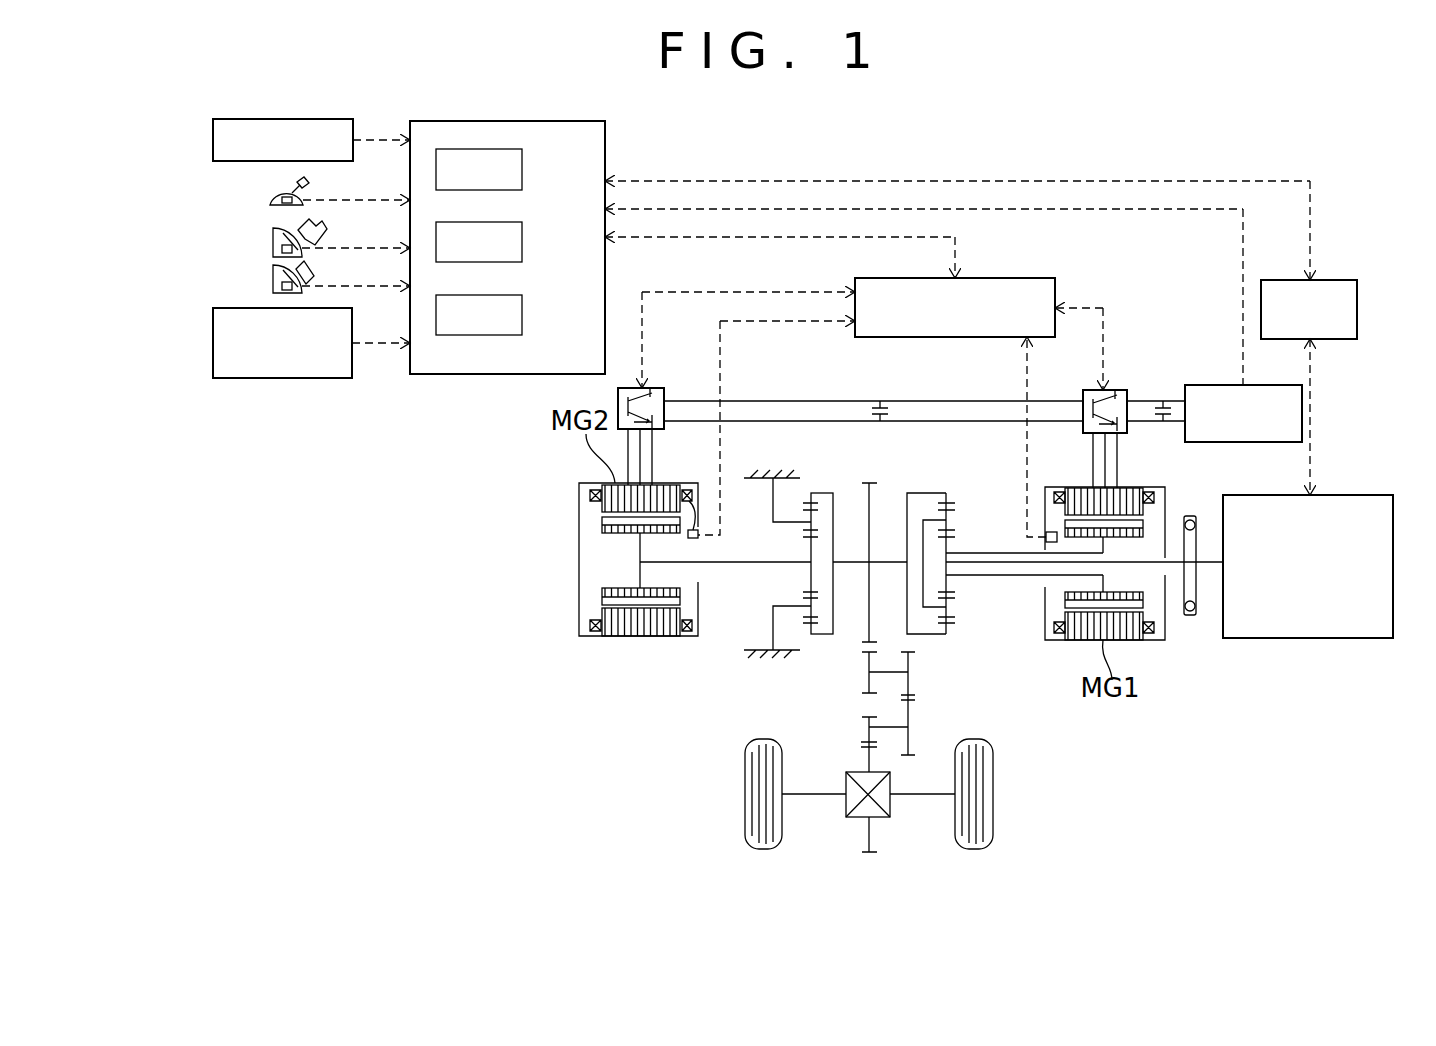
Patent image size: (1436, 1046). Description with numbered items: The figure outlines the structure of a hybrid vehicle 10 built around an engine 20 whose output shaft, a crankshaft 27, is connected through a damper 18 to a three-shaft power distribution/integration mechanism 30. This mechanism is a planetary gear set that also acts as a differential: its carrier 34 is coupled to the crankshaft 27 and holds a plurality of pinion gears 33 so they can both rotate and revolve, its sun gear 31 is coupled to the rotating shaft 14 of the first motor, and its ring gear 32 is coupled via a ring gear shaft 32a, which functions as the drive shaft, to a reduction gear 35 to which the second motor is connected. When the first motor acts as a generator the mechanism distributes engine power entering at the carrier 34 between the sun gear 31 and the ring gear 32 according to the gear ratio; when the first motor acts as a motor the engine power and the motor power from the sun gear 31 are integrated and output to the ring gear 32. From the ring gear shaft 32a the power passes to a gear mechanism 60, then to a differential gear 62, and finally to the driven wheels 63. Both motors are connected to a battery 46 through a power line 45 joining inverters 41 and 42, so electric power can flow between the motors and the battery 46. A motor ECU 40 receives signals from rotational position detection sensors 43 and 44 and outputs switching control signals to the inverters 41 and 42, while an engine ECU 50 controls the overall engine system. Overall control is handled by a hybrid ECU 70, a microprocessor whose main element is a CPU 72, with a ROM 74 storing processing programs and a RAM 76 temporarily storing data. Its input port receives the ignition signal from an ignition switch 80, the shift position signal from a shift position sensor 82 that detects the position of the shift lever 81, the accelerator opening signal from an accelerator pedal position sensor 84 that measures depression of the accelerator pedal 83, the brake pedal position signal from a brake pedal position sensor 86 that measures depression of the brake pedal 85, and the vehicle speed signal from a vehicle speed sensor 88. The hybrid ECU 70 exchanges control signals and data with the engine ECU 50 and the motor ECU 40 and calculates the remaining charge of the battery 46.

The hybrid vehicle 10 is at (1138, 155).
The rotating shaft 14 is at (973, 552).
The damper 18 is at (1192, 615).
The engine 20 is at (1332, 495).
The crankshaft 27 is at (1207, 567).
The power distribution/integration mechanism 30 is at (965, 551).
The sun gear 31 is at (947, 582).
The ring gear 32 is at (947, 633).
The ring gear shaft 32a is at (857, 565).
The pinion gears 33 is at (947, 605).
The carrier 34 is at (923, 532).
The reduction gear 35 is at (811, 490).
The motor ECU 40 is at (997, 278).
The inverter 41 is at (1122, 390).
The inverter 42 is at (655, 388).
The rotational position detection sensor 43 is at (1051, 532).
The rotational position detection sensor 44 is at (689, 530).
The power line 45 is at (933, 421).
The battery 46 is at (1242, 442).
The engine ECU 50 is at (1330, 280).
The gear mechanism 60 is at (905, 759).
The differential gear 62 is at (892, 805).
The driven wheels 63 is at (760, 739).
The hybrid ECU 70 is at (505, 121).
The CPU 72 is at (522, 169).
The ROM 74 is at (522, 241).
The RAM 76 is at (522, 314).
The ignition switch 80 is at (213, 135).
The shift lever 81 is at (300, 188).
The shift position sensor 82 is at (282, 200).
The accelerator pedal 83 is at (310, 230).
The accelerator pedal position sensor 84 is at (282, 249).
The brake pedal 85 is at (300, 270).
The brake pedal position sensor 86 is at (282, 287).
The vehicle speed sensor 88 is at (213, 346).